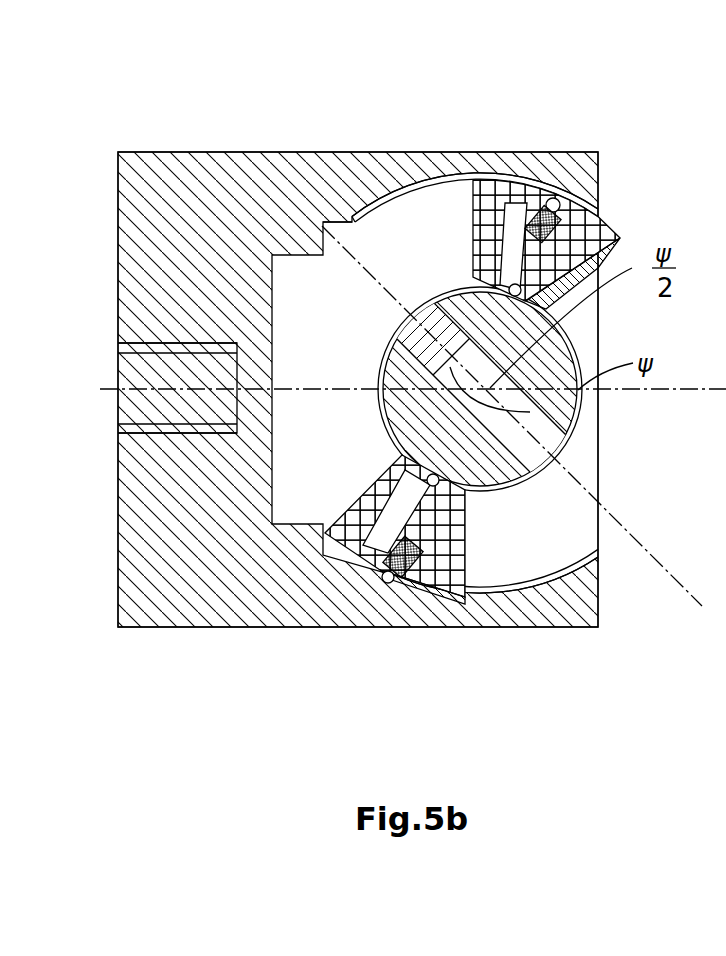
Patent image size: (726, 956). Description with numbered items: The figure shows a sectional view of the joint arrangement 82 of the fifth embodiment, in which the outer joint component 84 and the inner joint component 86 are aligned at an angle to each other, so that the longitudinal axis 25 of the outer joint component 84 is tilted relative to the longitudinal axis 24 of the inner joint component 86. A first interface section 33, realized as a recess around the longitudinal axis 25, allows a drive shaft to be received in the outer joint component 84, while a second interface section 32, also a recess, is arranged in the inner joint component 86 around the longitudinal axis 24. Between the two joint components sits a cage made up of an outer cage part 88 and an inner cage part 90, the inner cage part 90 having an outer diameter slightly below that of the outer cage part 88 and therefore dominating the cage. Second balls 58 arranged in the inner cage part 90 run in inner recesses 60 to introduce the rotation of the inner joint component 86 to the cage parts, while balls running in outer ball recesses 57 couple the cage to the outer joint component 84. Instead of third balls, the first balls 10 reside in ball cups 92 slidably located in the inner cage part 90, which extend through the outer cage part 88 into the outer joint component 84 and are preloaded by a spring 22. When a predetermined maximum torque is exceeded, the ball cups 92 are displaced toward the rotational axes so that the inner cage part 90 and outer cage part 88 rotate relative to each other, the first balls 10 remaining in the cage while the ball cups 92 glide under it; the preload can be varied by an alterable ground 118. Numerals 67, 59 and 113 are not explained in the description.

The joint arrangement 82 is at (116, 136).
The outer joint component 84 is at (200, 178).
The first interface section 33 is at (146, 408).
The shaft opening 67 is at (120, 372).
The outer ball recesses 57 is at (468, 176).
The spherical seat surface 59 is at (472, 225).
The second balls 58 is at (590, 597).
The inner joint component 86 is at (463, 283).
The inner recesses 60 is at (597, 352).
The second interface section 32 is at (537, 452).
The seal body 113 is at (527, 228).
The inner cage part 90 is at (621, 241).
The outer cage part 88 is at (585, 206).
The alterable ground 118 is at (556, 605).
The spring 22 is at (470, 585).
The ball cups 92 is at (415, 600).
The first balls 10 is at (387, 583).
The longitudinal axis of the outer joint component 25 is at (703, 390).
The longitudinal axis of the inner joint component 24 is at (700, 605).